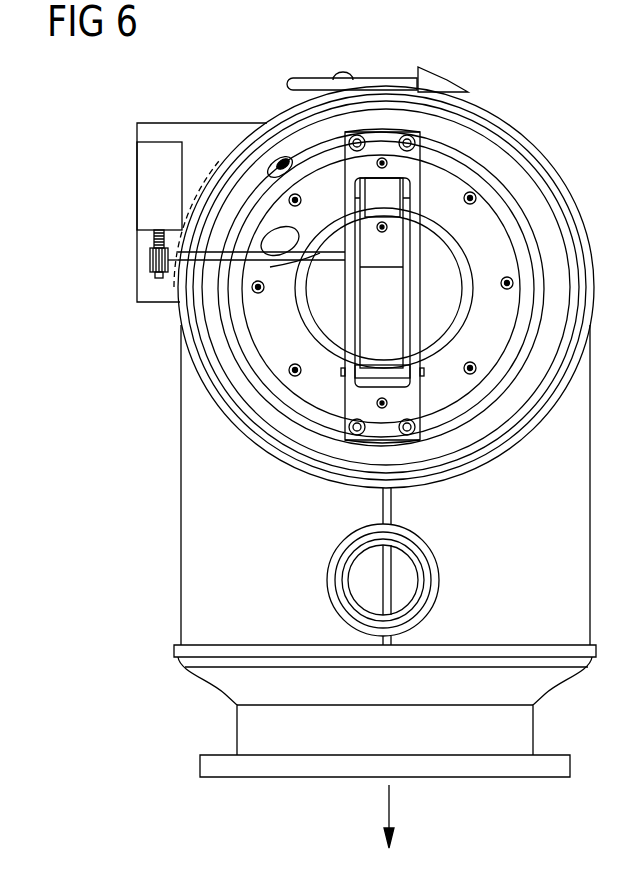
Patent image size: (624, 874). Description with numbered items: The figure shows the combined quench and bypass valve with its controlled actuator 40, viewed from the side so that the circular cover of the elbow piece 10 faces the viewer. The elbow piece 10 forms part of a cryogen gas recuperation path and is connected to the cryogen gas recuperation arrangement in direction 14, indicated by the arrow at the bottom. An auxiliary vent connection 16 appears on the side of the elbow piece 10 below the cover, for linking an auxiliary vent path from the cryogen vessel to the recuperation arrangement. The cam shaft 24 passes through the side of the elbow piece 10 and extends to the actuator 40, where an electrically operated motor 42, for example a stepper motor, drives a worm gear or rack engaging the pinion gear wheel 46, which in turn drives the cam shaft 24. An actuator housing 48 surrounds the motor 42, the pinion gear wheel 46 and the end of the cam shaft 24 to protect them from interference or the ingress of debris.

The elbow piece 10 is at (181, 508).
The direction 14 is at (389, 812).
The auxiliary vent connection 16 is at (439, 580).
The cam shaft 24 is at (317, 263).
The controlled actuator 40 is at (120, 138).
The motor 42 is at (148, 188).
The pinion gear wheel 46 is at (148, 275).
The actuator housing 48 is at (197, 132).